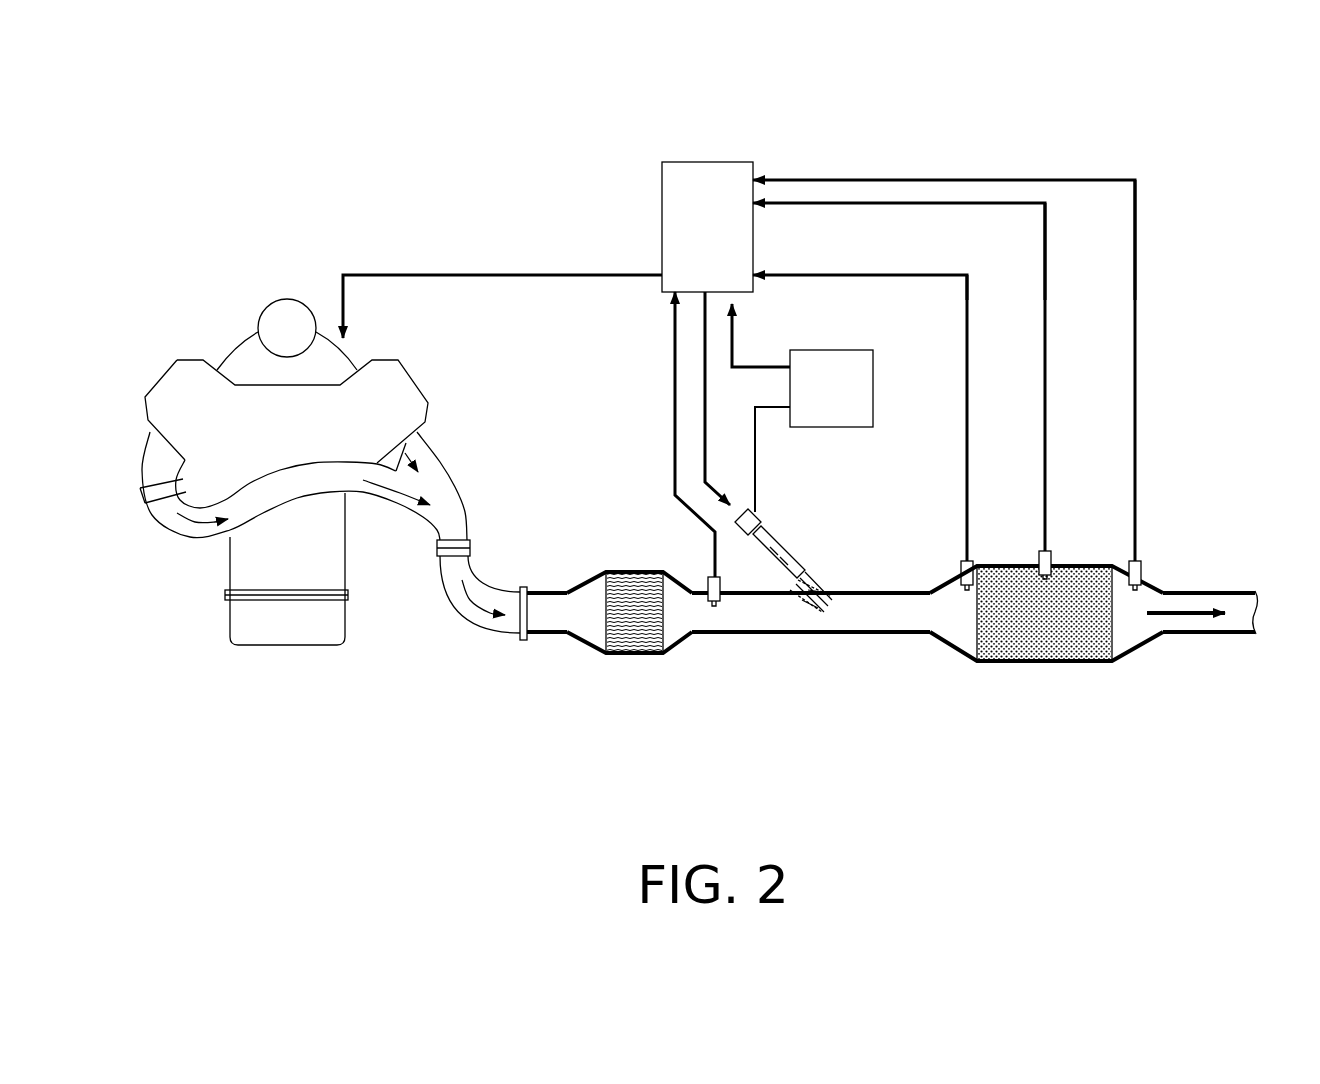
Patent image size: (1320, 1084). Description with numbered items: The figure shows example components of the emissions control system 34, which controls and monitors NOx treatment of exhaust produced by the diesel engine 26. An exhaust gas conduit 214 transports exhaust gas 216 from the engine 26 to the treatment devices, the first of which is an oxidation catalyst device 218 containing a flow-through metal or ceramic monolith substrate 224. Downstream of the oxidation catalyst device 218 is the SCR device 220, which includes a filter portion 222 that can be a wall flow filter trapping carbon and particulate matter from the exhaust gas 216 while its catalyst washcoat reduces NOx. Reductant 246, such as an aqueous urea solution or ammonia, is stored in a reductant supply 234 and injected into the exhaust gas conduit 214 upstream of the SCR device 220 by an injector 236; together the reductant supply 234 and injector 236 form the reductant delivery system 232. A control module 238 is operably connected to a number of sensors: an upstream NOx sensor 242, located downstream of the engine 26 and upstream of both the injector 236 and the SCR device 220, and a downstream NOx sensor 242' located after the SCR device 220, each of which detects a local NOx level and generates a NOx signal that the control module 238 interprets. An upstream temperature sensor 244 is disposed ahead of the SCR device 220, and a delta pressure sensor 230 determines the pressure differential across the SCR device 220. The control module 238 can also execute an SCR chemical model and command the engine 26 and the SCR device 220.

The diesel engine 26 is at (235, 325).
The exhaust gas conduit 214 is at (443, 460).
The exhaust gas 216 is at (463, 613).
The oxidation catalyst device 218 is at (622, 658).
The monolith substrate 224 is at (628, 590).
The emissions control system 34 is at (746, 662).
The upstream NOx sensor 242 is at (674, 449).
The injector 236 is at (805, 585).
The reductant 246 is at (820, 613).
The upstream temperature sensor 244 is at (958, 570).
The SCR device 220 is at (1072, 666).
The filter portion 222 is at (1040, 632).
The delta pressure sensor 230 is at (1052, 562).
The downstream NOx sensor 242' is at (998, 385).
The control module 238 is at (658, 233).
The reductant delivery system 232 is at (1027, 168).
The reductant supply 234 is at (877, 387).